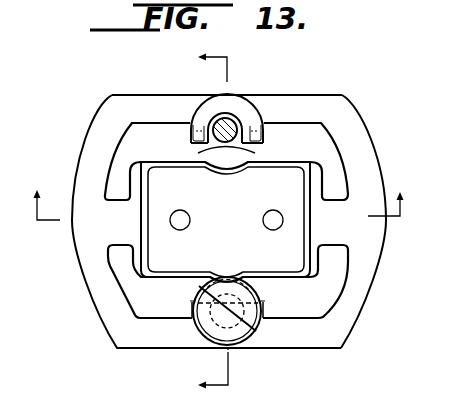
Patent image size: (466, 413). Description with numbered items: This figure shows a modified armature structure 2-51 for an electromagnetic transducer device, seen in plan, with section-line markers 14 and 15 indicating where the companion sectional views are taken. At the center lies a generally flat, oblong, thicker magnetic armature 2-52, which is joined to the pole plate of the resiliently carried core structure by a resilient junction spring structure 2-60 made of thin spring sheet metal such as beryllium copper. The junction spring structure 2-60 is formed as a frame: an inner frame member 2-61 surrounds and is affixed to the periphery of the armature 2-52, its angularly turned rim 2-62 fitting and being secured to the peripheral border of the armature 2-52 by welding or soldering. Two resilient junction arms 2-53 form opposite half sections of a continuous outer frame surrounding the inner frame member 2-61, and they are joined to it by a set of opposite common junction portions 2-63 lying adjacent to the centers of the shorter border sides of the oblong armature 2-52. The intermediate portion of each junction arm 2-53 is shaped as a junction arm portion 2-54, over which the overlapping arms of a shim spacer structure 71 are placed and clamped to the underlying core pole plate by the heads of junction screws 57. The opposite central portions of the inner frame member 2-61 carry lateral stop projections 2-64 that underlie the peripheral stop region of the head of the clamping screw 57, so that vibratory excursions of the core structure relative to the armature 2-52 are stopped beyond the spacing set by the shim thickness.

The armature structure 2-51 is at (78, 144).
The armature 2-52 is at (250, 215).
The resilient junction arm 2-53 is at (328, 109).
The junction arm portion 2-54 is at (197, 123).
The junction screw 57 is at (234, 120).
The shim spacer structure 71 is at (223, 104).
The junction spring structure 2-60 is at (294, 104).
The inner frame member 2-61 is at (317, 178).
The angularly turned rim 2-62 is at (283, 170).
The common junction portion 2-63 is at (122, 228).
The lateral stop projection 2-64 is at (199, 156).
The section line 14- 14 is at (202, 221).
The section line 15- 15 is at (220, 194).